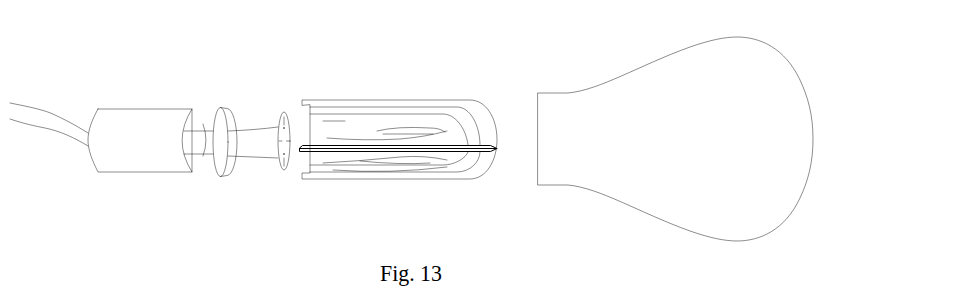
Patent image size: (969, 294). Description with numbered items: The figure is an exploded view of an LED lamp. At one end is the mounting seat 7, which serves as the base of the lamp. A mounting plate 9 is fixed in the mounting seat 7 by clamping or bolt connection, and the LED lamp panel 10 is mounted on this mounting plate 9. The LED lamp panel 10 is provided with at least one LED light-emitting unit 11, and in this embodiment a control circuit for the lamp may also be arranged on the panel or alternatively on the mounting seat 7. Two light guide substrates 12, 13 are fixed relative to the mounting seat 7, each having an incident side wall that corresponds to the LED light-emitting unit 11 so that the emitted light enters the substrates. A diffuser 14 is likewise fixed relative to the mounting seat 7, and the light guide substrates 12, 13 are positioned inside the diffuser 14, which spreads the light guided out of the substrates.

The mounting seat 7 is at (166, 132).
The mounting plate 9 is at (229, 119).
The LED lamp panel 10 is at (278, 133).
The LED light-emitting unit 11 is at (284, 121).
The light guide substrate 12 is at (318, 121).
The light guide substrate 13 is at (317, 144).
The diffuser 14 is at (580, 112).